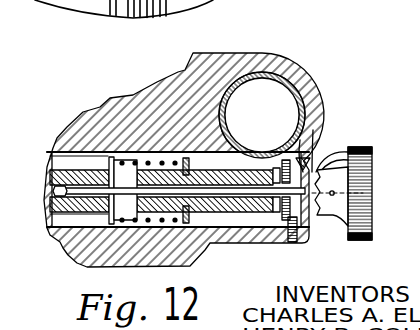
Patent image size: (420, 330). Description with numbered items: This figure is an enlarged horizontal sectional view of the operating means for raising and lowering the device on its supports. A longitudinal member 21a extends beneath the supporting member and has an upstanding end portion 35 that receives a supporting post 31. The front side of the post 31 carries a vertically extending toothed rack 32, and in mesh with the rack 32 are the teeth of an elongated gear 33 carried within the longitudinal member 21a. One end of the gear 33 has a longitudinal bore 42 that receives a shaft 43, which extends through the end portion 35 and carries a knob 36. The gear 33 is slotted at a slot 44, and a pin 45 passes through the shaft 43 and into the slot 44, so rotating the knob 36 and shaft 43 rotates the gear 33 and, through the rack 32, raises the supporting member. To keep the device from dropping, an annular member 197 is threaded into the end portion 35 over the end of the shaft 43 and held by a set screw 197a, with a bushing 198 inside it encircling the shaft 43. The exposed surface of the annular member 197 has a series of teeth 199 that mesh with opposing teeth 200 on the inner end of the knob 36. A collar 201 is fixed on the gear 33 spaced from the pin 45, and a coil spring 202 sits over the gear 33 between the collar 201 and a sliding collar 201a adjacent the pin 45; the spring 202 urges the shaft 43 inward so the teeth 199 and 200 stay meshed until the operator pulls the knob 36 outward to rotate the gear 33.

The longitudinal member 21a is at (50, 232).
The supporting post 31 is at (304, 97).
The toothed rack 32 is at (258, 158).
The elongated gear 33 is at (247, 210).
The upstanding end portion 35 is at (226, 62).
The knob 36 is at (372, 148).
The longitudinal bore 42 is at (58, 192).
The shaft 43 is at (256, 200).
The slot 44 is at (107, 165).
The pin 45 is at (102, 160).
The annular member 197 is at (314, 142).
The set screw 197a is at (293, 250).
The bushing 198 is at (296, 158).
The teeth 199 is at (321, 218).
The opposing teeth 200 is at (322, 172).
The collar 201 is at (185, 226).
The sliding collar 201a is at (113, 225).
The coil spring 202 is at (147, 223).